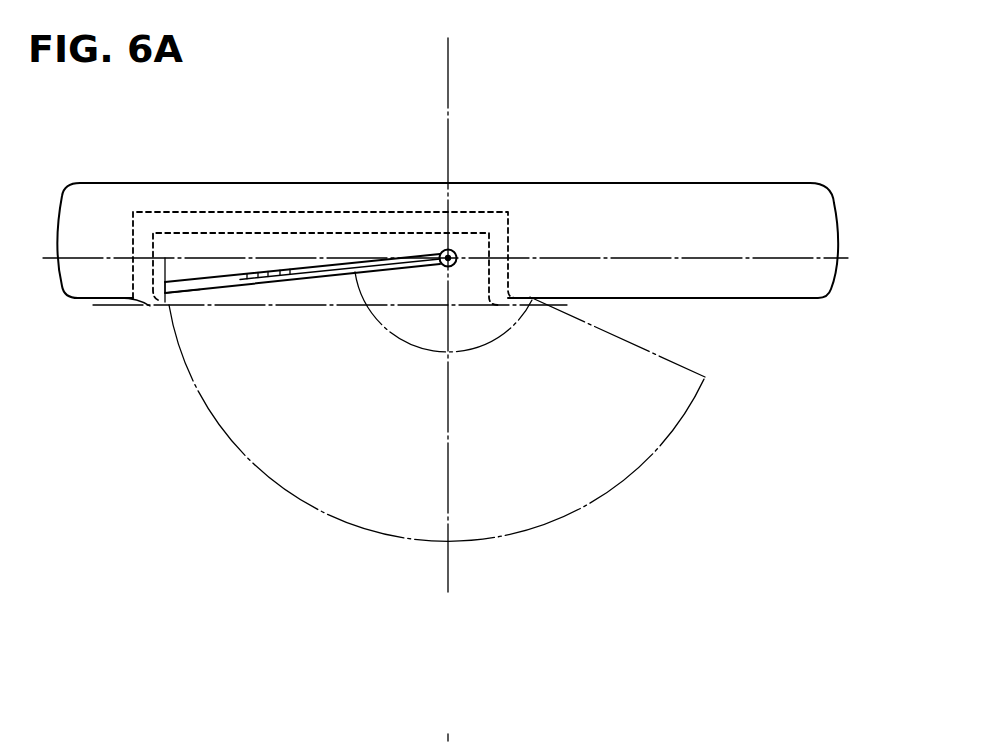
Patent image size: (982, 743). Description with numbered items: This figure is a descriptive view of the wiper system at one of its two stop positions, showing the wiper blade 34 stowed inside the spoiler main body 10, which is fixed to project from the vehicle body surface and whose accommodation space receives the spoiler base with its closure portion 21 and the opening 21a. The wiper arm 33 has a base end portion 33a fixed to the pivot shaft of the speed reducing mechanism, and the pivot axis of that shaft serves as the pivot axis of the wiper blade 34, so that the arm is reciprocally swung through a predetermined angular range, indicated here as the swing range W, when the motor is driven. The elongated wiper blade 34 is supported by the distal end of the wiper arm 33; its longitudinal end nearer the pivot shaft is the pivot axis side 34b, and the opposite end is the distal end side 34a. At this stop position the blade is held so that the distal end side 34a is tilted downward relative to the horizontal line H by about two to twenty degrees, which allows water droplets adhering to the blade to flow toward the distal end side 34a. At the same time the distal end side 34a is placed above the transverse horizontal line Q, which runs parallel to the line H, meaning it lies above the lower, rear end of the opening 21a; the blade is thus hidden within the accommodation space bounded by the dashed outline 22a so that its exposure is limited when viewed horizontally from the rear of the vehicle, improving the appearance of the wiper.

The spoiler main body 10 is at (723, 200).
The closure portion 21 is at (148, 300).
The opening 21a is at (163, 304).
The guide portion 22a is at (508, 213).
The wiper arm 33 is at (402, 266).
The base end portion 33a is at (456, 252).
The wiper blade 34 is at (237, 276).
The distal end side 34a is at (181, 280).
The pivot axis side 34b is at (327, 267).
The horizontal line H is at (813, 257).
The transverse horizontal line Q is at (105, 308).
The swing range W is at (302, 442).